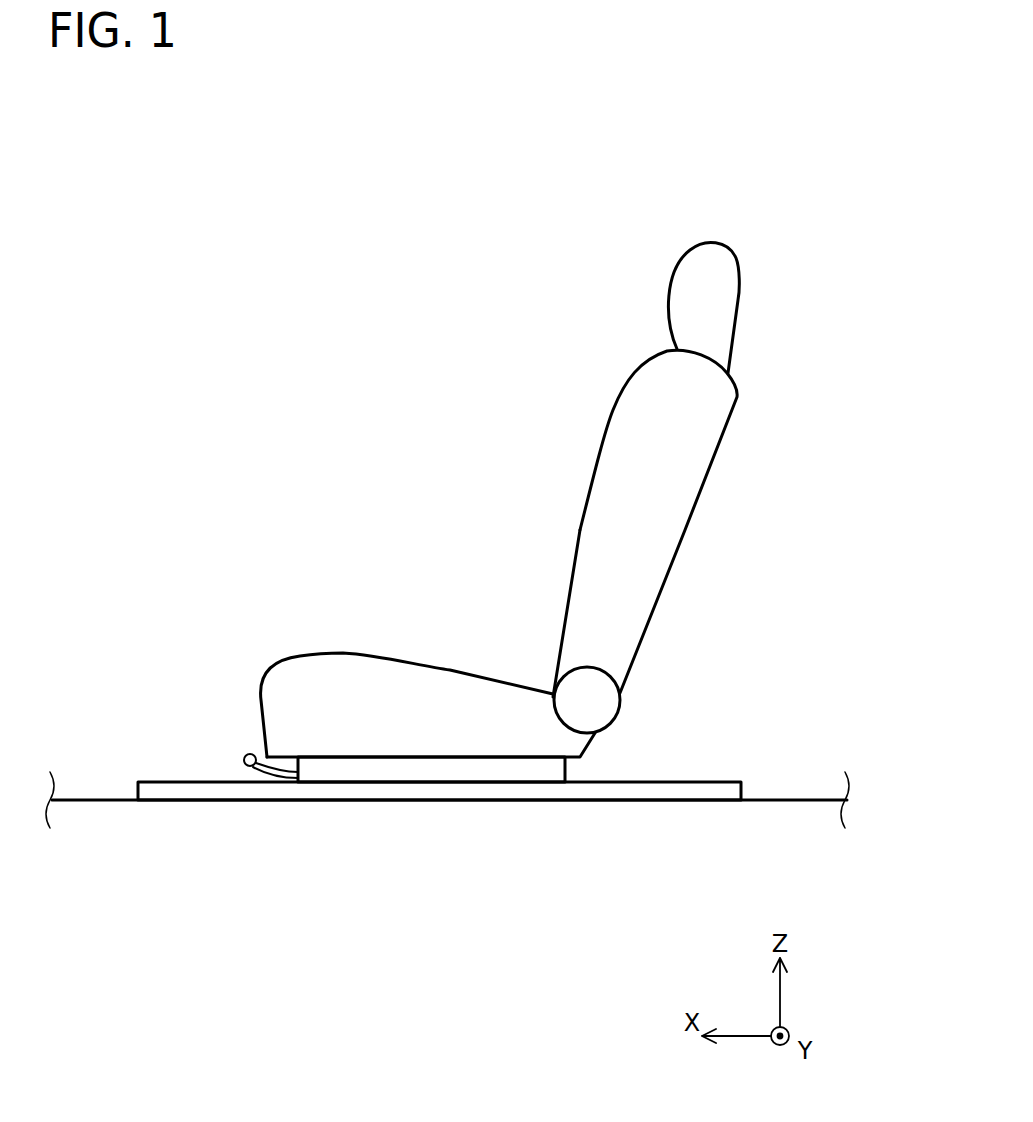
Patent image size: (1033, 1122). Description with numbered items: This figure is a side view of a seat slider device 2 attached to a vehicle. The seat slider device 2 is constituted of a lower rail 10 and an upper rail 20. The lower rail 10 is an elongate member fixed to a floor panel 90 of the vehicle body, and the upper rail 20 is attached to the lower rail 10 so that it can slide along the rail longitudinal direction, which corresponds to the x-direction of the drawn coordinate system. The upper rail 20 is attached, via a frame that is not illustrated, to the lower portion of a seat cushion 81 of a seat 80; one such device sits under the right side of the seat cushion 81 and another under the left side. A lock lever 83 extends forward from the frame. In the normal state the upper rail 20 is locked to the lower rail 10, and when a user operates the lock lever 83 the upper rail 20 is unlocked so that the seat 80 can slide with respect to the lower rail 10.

The seat slider device 2 is at (439, 863).
The lower rail 10 is at (358, 800).
The upper rail 20 is at (418, 800).
The seat 80 is at (461, 510).
The seat cushion 81 is at (405, 668).
The lock lever 83 is at (247, 756).
The floor panel 90 is at (785, 800).